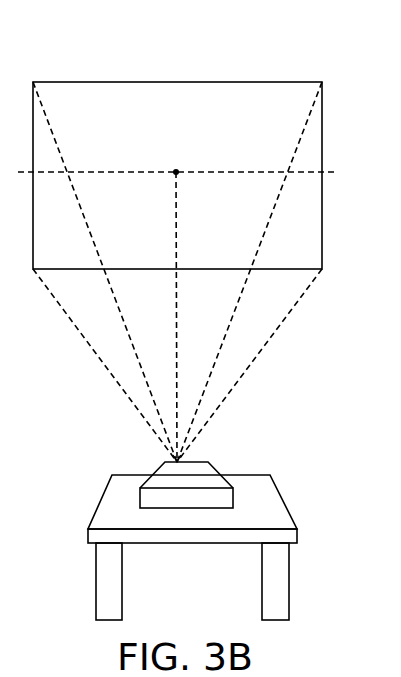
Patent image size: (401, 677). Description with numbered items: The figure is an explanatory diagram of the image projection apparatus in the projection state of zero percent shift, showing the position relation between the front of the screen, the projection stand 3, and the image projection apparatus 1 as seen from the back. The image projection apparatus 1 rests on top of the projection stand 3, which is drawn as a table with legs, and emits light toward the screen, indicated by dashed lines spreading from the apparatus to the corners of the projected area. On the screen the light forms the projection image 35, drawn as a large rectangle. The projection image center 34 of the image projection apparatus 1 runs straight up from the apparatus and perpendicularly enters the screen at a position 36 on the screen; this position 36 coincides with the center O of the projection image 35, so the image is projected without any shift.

The image projection apparatus 1 is at (160, 466).
The projection stand 3 is at (87, 530).
The projection image center 34 is at (177, 382).
The projection image 35 is at (274, 97).
The position 36 is at (177, 170).